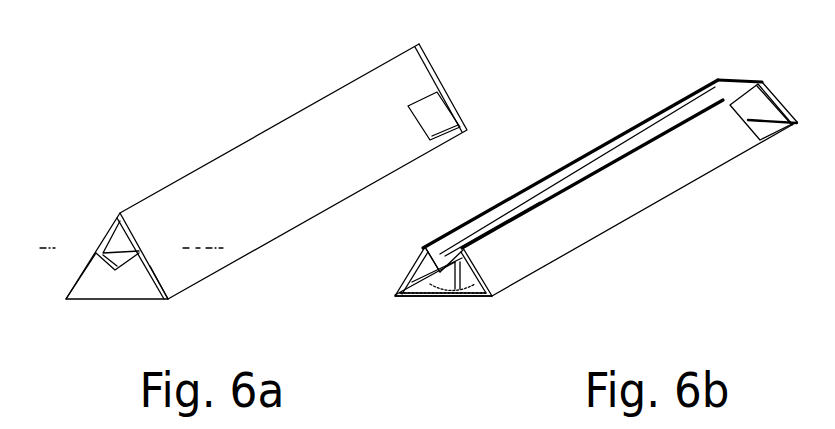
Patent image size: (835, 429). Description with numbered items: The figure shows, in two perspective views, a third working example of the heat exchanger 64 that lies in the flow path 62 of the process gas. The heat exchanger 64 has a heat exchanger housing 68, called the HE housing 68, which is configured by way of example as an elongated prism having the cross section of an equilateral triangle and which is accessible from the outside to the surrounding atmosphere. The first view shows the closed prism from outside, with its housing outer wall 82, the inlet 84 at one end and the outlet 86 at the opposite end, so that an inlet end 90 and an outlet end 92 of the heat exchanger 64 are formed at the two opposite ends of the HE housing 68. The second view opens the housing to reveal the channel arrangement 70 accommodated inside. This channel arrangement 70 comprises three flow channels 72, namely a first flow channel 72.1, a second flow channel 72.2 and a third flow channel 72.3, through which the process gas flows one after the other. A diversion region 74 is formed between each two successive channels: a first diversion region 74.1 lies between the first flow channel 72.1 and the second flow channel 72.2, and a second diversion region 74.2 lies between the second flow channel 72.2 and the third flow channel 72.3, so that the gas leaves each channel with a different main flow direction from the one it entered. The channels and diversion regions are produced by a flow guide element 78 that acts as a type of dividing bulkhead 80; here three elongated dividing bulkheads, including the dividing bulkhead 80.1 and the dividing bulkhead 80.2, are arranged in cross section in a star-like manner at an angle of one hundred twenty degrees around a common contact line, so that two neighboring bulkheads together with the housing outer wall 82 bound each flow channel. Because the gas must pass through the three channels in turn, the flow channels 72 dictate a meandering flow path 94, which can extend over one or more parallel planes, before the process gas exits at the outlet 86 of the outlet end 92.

In FIG. 6b, the flow path 62 is at (542, 203).
In FIG. 6a, the heat exchanger 64 is at (238, 113).
In FIG. 6b, the heat exchanger 64 is at (647, 102).
In FIG. 6a, the heat exchanger housing 68 is at (363, 76).
In FIG. 6b, the heat exchanger housing 68 is at (688, 186).
In FIG. 6b, the channel arrangement 70 is at (627, 150).
In FIG. 6b, the flow channels 72 is at (568, 168).
In FIG. 6b, the first flow channel 72.1 is at (582, 172).
In FIG. 6b, the second flow channel 72.2 is at (480, 220).
In FIG. 6b, the third flow channel 72.3 is at (753, 137).
In FIG. 6b, the diversion region 74 is at (748, 75).
In FIG. 6b, the first diversion region 74.1 is at (726, 76).
In FIG. 6b, the second diversion region 74.2 is at (433, 296).
In FIG. 6b, the flow guide element 78 is at (428, 263).
In FIG. 6b, the dividing bulkhead 80 is at (440, 262).
In FIG. 6b, the first dividing bulkhead 80.1 is at (422, 278).
In FIG. 6b, the second dividing bulkhead 80.2 is at (500, 287).
In FIG. 6a, the housing outer wall 82 is at (345, 85).
In FIG. 6a, the inlet 84 is at (108, 240).
In FIG. 6a, the outlet 86 is at (457, 103).
In FIG. 6a, the inlet end 90 is at (173, 301).
In FIG. 6a, the outlet end 92 is at (452, 84).
In FIG. 6b, the meandering flow path 94 is at (410, 262).